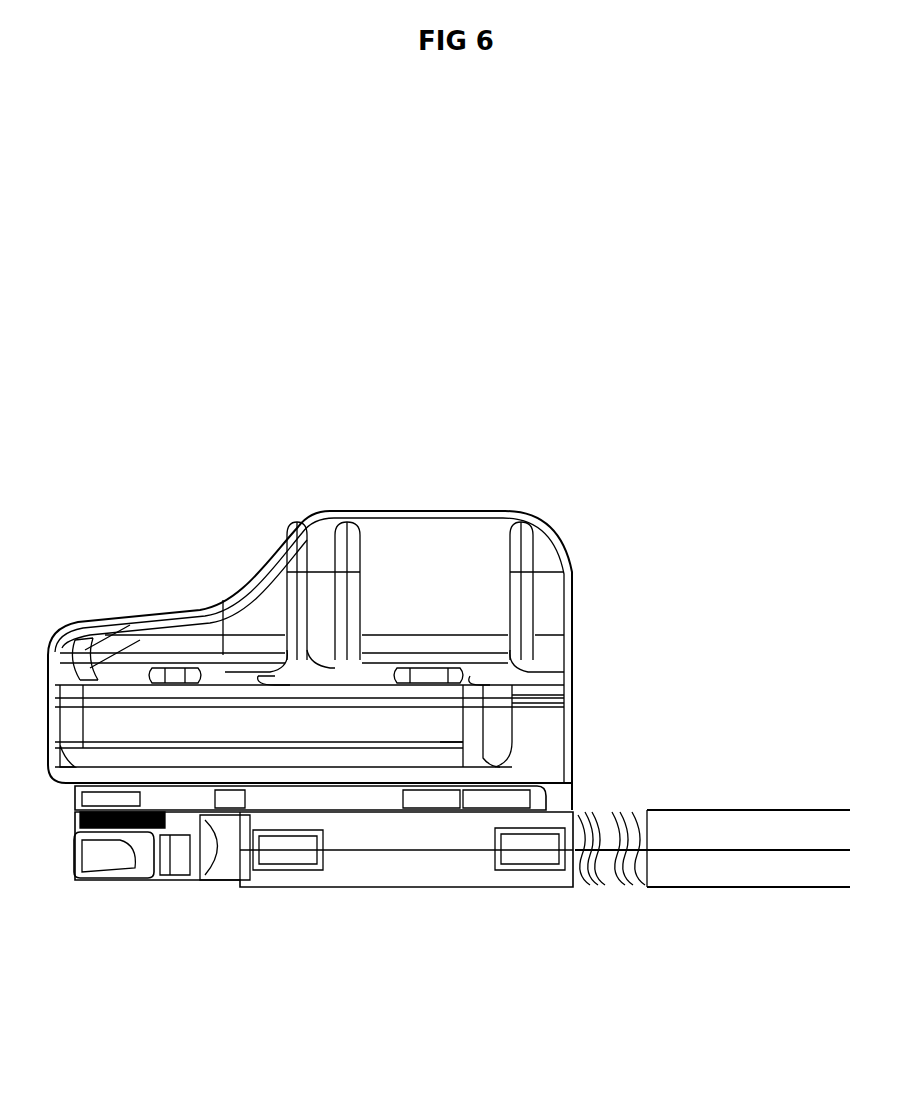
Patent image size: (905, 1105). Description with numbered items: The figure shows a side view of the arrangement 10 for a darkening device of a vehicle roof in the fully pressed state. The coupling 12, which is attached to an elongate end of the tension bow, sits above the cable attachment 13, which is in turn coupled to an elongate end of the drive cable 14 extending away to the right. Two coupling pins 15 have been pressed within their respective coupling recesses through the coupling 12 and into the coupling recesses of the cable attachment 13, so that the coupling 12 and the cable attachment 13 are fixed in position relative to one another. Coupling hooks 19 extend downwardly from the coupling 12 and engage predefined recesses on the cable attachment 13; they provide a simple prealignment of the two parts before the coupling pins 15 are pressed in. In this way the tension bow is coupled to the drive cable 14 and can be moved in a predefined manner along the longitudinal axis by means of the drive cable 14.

The arrangement 10 is at (690, 334).
The coupling 12 is at (410, 566).
The cable attachment 13 is at (378, 864).
The drive cable 14 is at (818, 835).
The coupling pins 15 is at (175, 668).
The coupling hooks 19 is at (548, 796).